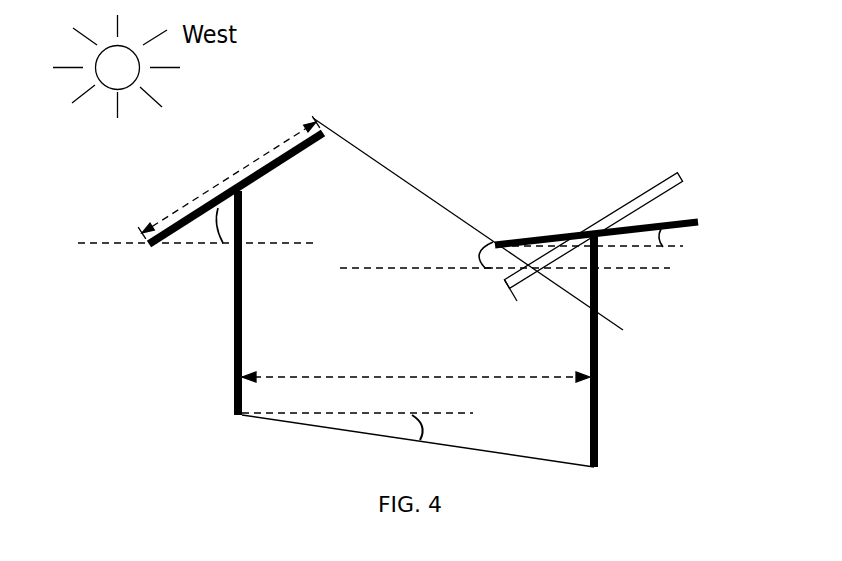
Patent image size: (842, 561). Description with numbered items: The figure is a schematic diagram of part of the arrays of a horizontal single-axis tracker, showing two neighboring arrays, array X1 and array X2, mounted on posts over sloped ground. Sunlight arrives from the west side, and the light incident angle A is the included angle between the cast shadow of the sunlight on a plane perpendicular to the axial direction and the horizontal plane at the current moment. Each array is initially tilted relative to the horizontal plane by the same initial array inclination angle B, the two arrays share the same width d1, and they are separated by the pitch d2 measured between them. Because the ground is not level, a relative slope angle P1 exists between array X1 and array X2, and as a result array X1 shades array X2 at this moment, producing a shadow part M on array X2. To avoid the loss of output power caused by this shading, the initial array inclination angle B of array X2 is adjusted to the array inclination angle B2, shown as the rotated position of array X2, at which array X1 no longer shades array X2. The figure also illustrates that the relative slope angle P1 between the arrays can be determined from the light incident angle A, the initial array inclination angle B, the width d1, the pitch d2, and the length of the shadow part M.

The array X1 is at (200, 257).
The array X2 is at (519, 304).
The width of the array d1 is at (361, 177).
The pitch between the arrays d2 is at (416, 366).
The light incident angle A is at (472, 255).
The initial array inclination angle B is at (241, 225).
The array inclination angle B2 is at (683, 242).
The shadow part M is at (533, 301).
The relative slope angle P1 is at (418, 440).